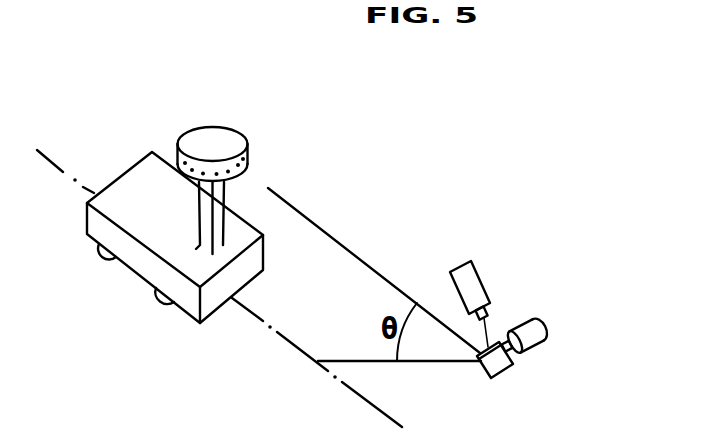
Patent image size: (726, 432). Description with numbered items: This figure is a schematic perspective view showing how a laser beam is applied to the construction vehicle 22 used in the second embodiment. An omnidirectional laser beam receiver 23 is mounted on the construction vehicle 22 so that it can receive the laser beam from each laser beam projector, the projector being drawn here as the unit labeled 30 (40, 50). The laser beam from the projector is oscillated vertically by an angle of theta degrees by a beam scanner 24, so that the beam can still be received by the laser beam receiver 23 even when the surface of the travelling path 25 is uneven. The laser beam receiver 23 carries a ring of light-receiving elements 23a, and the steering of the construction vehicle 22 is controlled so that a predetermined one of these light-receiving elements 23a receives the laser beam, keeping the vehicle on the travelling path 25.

The construction vehicle 22 is at (138, 260).
The omnidirectional laser beam receiver 23 is at (225, 150).
The light-receiving elements 23a is at (178, 172).
The beam scanner 24 is at (535, 340).
The travelling path 25 is at (378, 407).
The sensor unit 30 is at (527, 269).
The sensor unit (alternative) 40 is at (470, 304).
The sensor unit (alternative) 50 is at (470, 264).